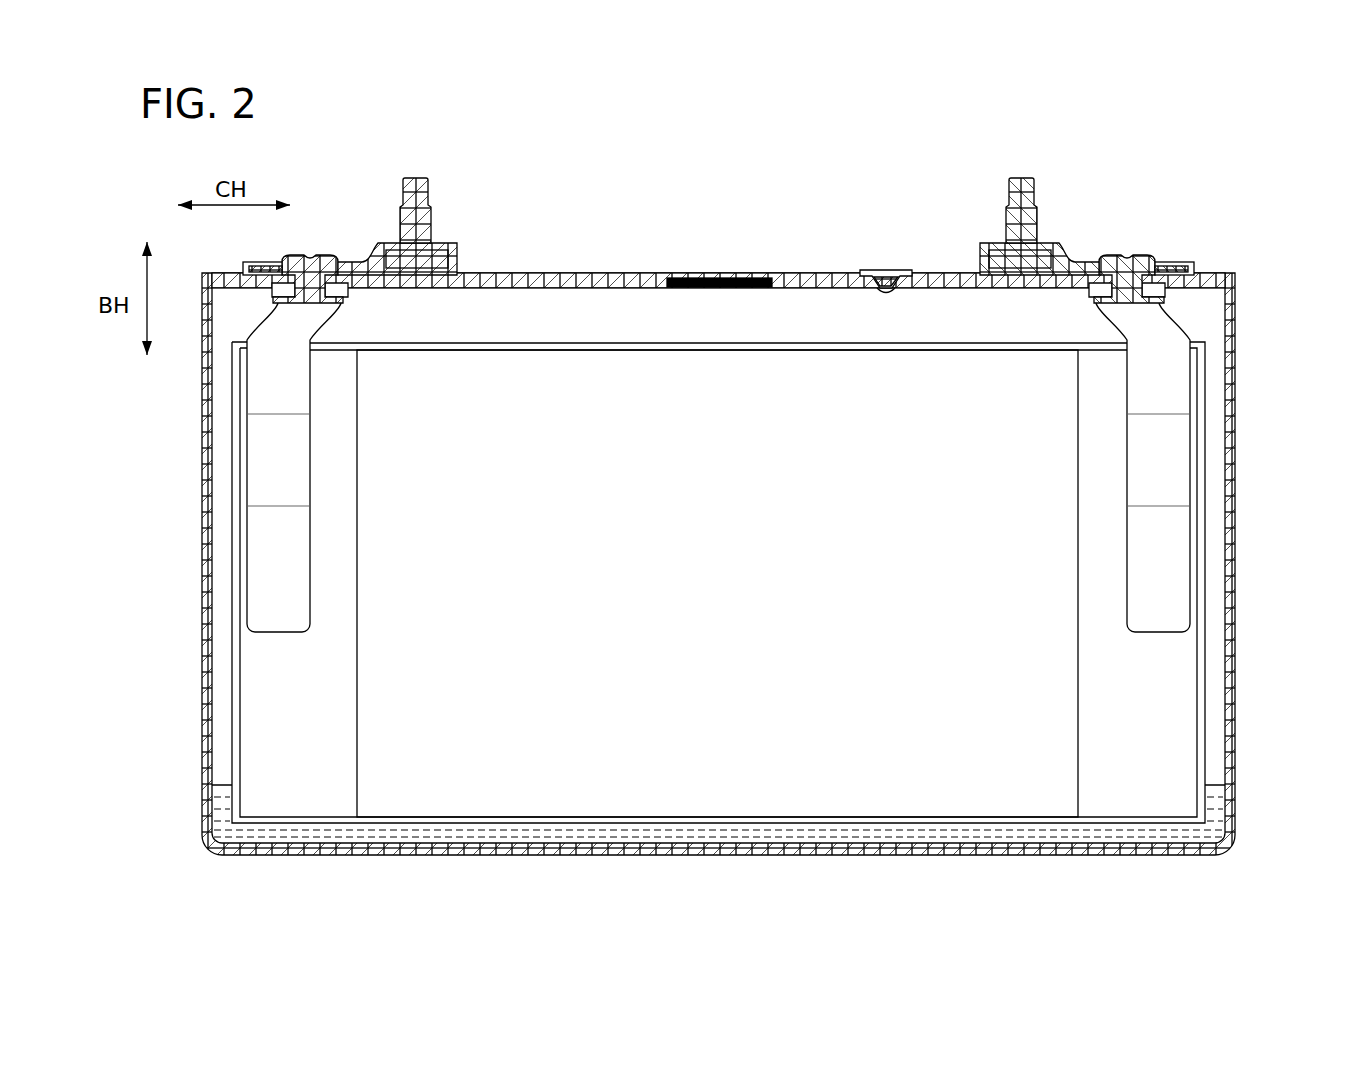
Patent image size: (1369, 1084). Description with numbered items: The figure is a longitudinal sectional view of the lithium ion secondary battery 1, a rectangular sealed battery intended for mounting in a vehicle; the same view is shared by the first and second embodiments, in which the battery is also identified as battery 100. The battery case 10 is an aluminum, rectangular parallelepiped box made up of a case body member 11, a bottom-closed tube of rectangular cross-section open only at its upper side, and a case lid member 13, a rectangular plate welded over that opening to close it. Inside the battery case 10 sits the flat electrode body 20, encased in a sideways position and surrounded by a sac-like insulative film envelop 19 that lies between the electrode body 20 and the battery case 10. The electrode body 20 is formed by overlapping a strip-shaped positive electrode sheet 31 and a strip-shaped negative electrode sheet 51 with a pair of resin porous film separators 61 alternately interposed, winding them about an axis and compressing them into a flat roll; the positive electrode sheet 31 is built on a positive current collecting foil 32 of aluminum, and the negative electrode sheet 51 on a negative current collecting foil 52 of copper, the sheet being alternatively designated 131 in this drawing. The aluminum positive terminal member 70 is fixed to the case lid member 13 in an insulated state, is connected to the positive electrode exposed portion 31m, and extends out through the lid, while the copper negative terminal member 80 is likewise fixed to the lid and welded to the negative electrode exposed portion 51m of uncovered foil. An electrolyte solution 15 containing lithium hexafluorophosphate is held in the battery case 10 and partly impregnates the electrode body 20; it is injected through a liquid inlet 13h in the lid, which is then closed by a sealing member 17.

The lithium ion secondary battery 1 is at (1160, 212).
The battery 100 is at (703, 528).
The battery case 10 is at (718, 563).
The case body member 11 is at (457, 848).
The case lid member 13 is at (585, 278).
The liquid inlet 13h is at (887, 292).
The electrolyte solution 15 is at (675, 765).
The sealing member 17 is at (890, 270).
The insulative film envelop 19 is at (792, 342).
The electrode body 20 is at (1022, 773).
The positive electrode sheet 31 is at (270, 730).
The negative electrode current collector 131 is at (294, 467).
The positive electrode exposed portion 31m is at (263, 672).
The positive current collecting foil 32 is at (270, 768).
The negative electrode sheet 51 is at (1173, 730).
The negative electrode exposed portion 51m is at (1183, 677).
The negative current collecting foil 52 is at (1173, 768).
The separators 61 is at (833, 773).
The positive terminal member 70 is at (370, 236).
The negative terminal member 80 is at (1067, 236).